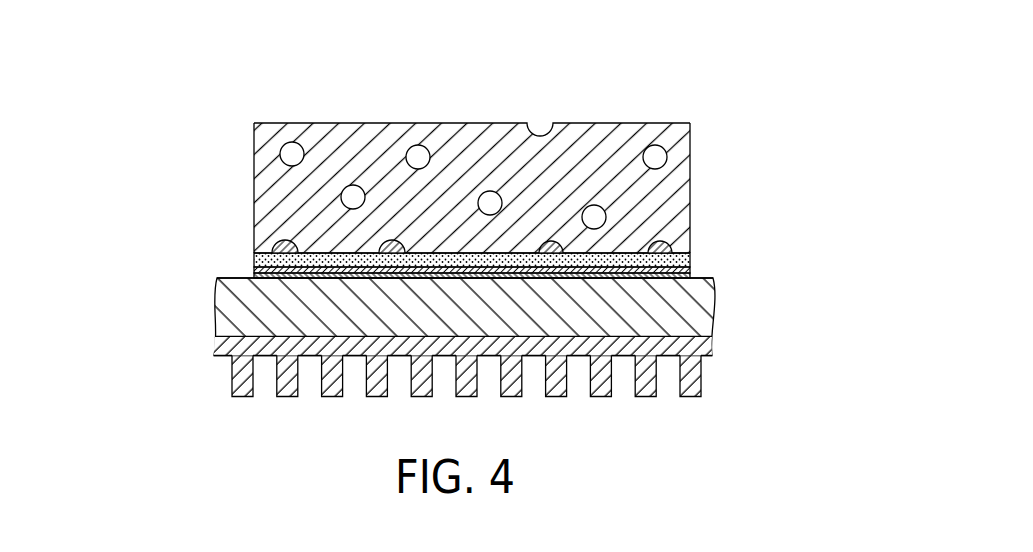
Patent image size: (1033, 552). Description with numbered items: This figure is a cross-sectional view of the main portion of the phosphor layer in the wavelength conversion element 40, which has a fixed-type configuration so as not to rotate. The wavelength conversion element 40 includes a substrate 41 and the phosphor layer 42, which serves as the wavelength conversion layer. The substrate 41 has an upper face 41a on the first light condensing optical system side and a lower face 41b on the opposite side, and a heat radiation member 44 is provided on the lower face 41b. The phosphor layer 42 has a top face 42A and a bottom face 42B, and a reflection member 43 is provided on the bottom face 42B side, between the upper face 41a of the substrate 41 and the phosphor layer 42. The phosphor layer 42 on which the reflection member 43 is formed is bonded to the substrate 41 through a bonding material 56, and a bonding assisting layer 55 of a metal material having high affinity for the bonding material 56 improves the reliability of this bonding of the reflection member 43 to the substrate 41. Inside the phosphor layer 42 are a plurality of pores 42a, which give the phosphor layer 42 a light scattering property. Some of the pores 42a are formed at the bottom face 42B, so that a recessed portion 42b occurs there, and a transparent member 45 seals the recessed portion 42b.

The wavelength conversion element 40 is at (699, 78).
The substrate 41 is at (454, 308).
The upper face 41a is at (218, 278).
The lower face 41b is at (218, 350).
The phosphor layer 42 is at (450, 149).
The top face 42A is at (633, 123).
The bottom face 42B is at (253, 256).
The pores 42a is at (485, 200).
The recessed portion 42b is at (262, 243).
The reflection member 43 is at (690, 258).
The heat radiation member 44 is at (692, 378).
The transparent member 45 is at (392, 249).
The bonding assisting layer 55 is at (690, 268).
The bonding material 56 is at (690, 277).